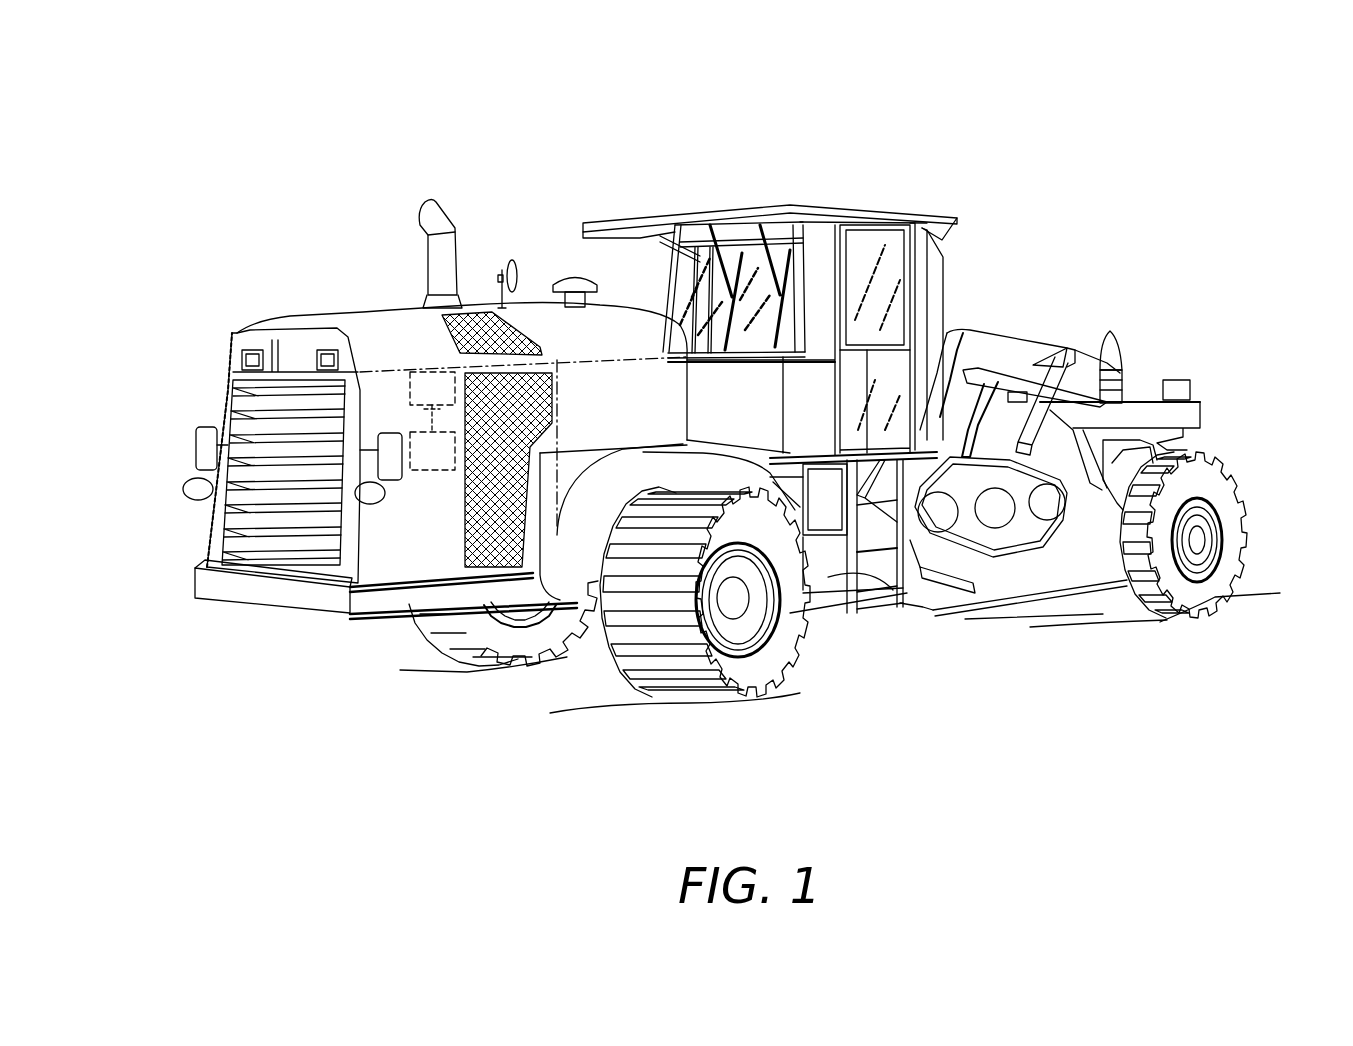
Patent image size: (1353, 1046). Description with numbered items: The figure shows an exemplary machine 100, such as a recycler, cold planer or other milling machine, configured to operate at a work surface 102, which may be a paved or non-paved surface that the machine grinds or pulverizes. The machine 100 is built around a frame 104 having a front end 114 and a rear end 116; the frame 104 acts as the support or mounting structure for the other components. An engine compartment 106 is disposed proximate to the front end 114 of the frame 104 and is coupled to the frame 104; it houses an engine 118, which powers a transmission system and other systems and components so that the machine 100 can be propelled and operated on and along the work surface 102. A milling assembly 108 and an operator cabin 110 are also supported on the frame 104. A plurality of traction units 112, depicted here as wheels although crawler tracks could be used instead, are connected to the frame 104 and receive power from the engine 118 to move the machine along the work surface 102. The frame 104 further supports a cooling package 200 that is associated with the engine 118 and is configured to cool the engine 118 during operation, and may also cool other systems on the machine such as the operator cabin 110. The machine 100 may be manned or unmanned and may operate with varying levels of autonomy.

The machine 100 is at (1230, 148).
The work surface 102 is at (800, 693).
The frame 104 is at (903, 618).
The engine compartment 106 is at (393, 540).
The milling assembly 108 is at (1012, 575).
The operator cabin 110 is at (855, 222).
The traction units 112 is at (528, 652).
The front end 114 is at (203, 542).
The rear end 116 is at (1205, 412).
The engine 118 is at (447, 400).
The cooling package 200 is at (449, 464).